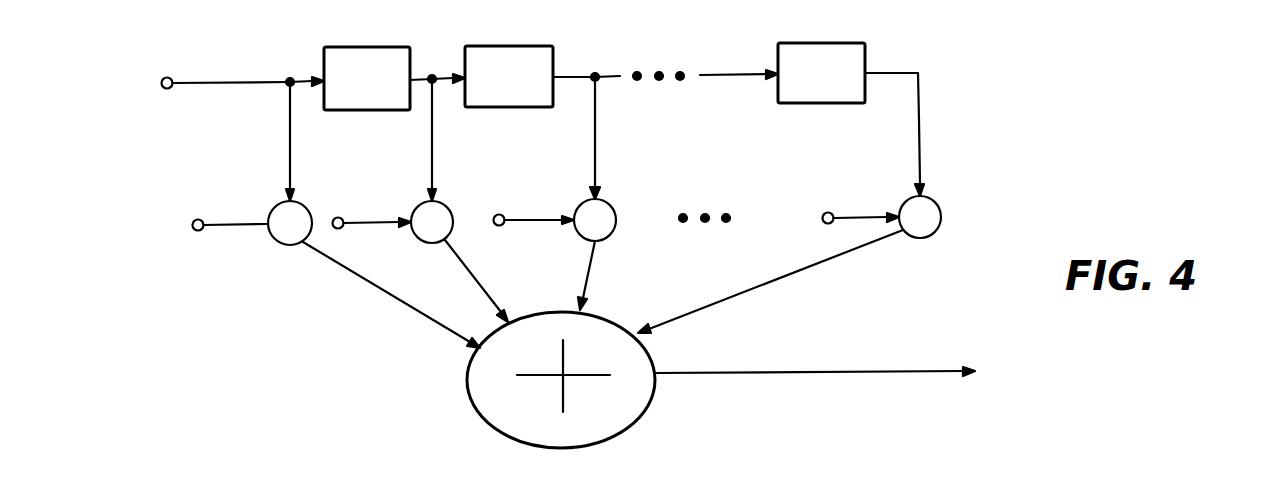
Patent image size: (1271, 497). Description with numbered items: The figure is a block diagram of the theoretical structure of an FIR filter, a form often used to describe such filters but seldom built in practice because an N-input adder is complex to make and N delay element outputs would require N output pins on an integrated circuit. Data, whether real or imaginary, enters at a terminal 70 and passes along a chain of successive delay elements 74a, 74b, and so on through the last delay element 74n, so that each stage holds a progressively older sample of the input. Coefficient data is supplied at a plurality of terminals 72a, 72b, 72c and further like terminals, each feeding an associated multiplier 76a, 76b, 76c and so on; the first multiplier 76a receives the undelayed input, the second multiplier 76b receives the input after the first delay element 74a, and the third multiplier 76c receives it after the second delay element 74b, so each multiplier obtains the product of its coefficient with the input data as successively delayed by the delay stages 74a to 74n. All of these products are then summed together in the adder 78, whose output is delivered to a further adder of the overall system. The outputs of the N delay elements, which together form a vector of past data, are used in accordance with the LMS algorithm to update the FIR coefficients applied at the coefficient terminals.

The terminal 70 is at (165, 90).
The delay element 74a is at (397, 110).
The delay element 74b is at (480, 107).
The delay element 74n is at (810, 103).
The terminal 72a is at (198, 231).
The terminal 72b is at (340, 229).
The terminal 72c is at (500, 226).
The multiplier 76a is at (278, 245).
The multiplier 76b is at (433, 243).
The multiplier 76c is at (610, 237).
The adder 78 is at (466, 389).